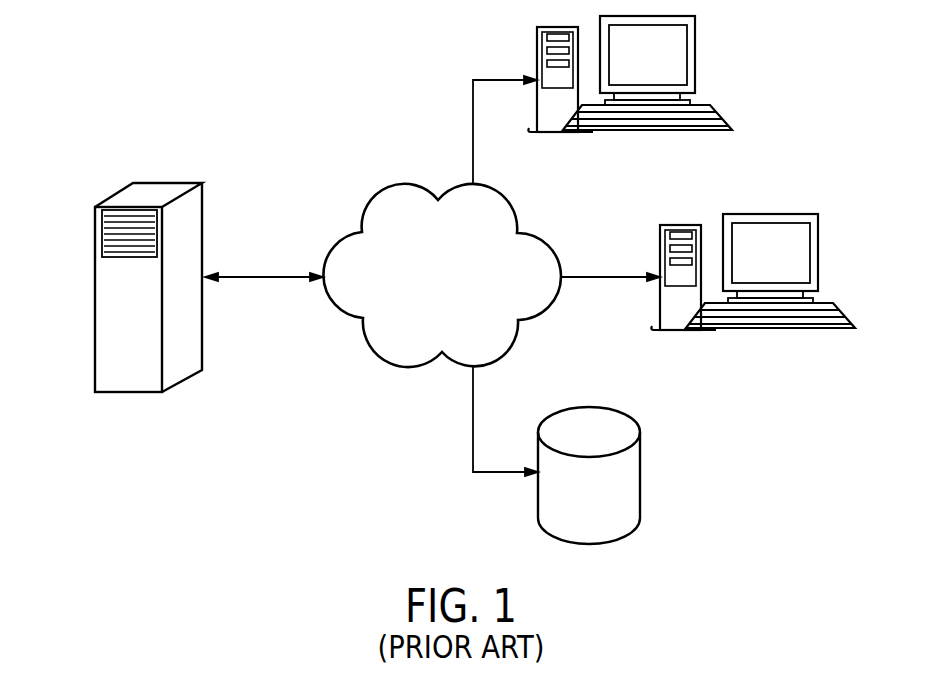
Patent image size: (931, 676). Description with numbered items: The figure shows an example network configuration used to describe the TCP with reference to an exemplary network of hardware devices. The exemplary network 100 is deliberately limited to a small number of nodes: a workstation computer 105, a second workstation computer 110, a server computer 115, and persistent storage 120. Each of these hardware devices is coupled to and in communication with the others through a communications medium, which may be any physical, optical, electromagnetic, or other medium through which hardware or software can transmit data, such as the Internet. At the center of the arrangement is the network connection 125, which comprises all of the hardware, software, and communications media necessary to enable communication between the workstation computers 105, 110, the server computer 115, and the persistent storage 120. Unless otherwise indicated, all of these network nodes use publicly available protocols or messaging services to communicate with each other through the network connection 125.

The network 100 is at (279, 79).
The workstation computer 105 is at (695, 53).
The workstation computer 110 is at (783, 215).
The server computer 115 is at (117, 192).
The persistent storage 120 is at (590, 412).
The network connection 125 is at (442, 275).